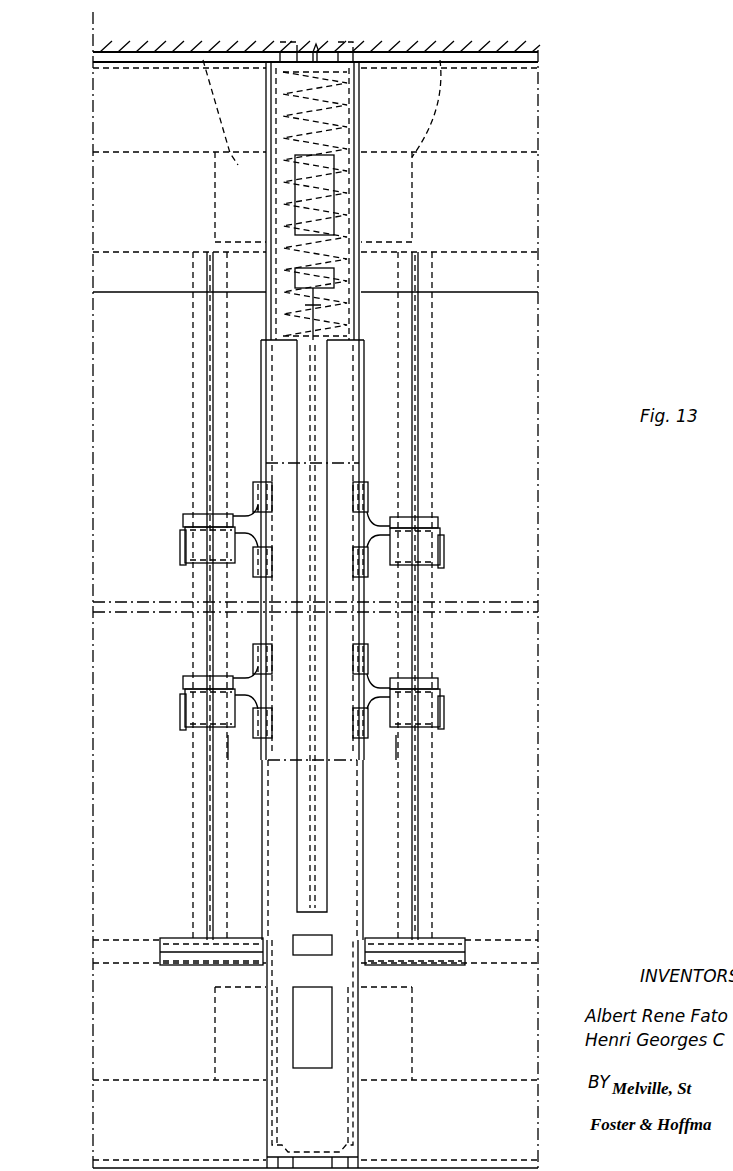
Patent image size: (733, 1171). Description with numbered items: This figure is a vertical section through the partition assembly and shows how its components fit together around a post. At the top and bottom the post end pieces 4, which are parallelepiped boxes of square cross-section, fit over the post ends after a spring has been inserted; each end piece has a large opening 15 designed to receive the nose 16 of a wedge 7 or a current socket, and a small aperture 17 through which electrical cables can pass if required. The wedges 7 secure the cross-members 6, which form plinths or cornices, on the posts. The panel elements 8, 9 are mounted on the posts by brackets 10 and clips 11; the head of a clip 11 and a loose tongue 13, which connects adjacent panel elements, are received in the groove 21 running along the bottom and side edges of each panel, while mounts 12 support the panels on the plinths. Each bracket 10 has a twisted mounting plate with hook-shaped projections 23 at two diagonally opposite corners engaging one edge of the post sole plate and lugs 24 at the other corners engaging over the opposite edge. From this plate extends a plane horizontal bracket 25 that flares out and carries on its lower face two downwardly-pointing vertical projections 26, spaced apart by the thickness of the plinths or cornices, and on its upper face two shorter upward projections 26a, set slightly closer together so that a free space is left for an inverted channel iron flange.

The post end piece 4 is at (293, 148).
The cross-member 6 is at (165, 80).
The wedge 7 is at (204, 60).
The panel element 8 is at (108, 422).
The panel element 9 is at (240, 440).
The bracket 10 is at (253, 550).
The clip 11 is at (187, 566).
The mount 12 is at (198, 960).
The loose tongue 13 is at (213, 357).
The large opening 15 is at (337, 160).
The nose 16 is at (334, 185).
The small aperture 17 is at (334, 278).
The groove 21 is at (215, 312).
The hook-shaped projection 23 is at (252, 655).
The lug 24 is at (253, 500).
The plane horizontal bracket 25 is at (250, 527).
The downwardly-pointing vertical projection 26 is at (237, 556).
The upward projection 26a is at (183, 518).